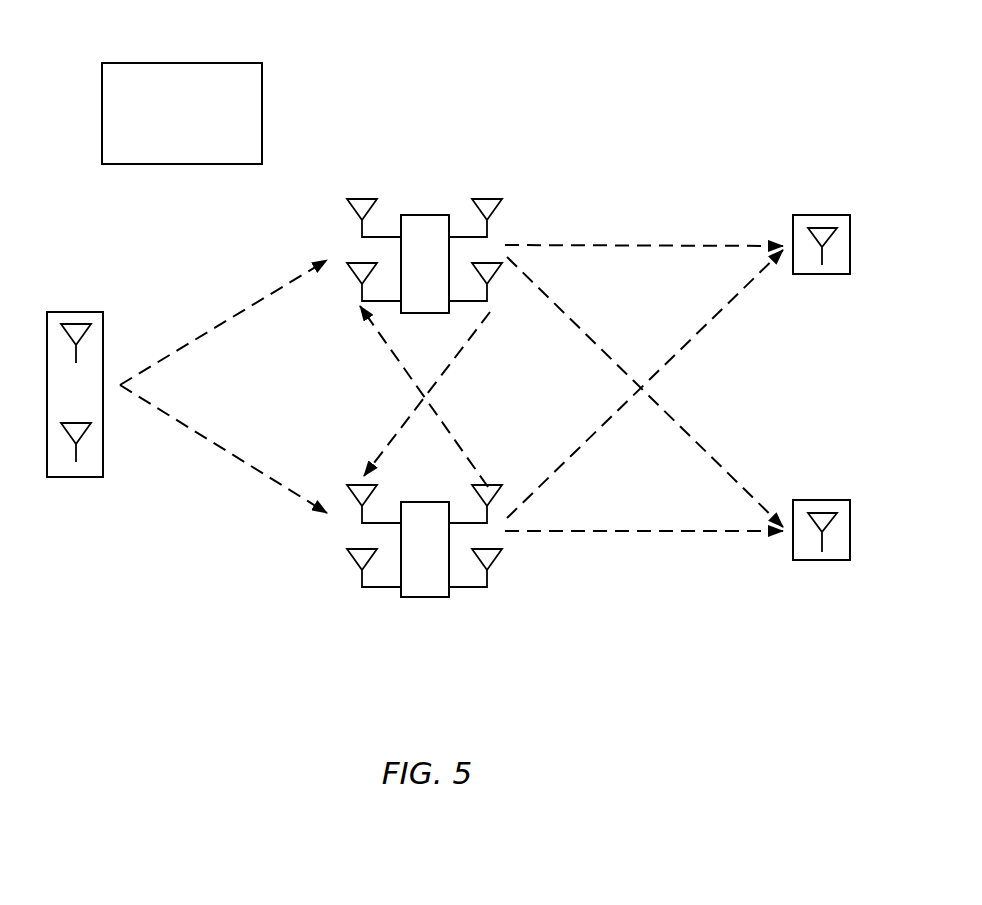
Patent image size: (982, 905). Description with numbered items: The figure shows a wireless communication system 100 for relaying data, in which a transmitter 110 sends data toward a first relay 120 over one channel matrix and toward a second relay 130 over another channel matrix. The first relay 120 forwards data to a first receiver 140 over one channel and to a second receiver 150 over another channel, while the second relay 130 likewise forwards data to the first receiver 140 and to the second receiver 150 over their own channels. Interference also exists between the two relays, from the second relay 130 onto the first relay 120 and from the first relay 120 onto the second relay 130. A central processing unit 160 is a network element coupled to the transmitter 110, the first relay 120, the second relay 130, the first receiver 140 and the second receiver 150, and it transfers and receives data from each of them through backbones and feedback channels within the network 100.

The wireless communication system 100 is at (680, 633).
The transmitter 110 is at (74, 312).
The first relay 120 is at (426, 215).
The second relay 130 is at (425, 597).
The first receiver 140 is at (822, 215).
The second receiver 150 is at (822, 500).
The central processing unit 160 is at (181, 63).